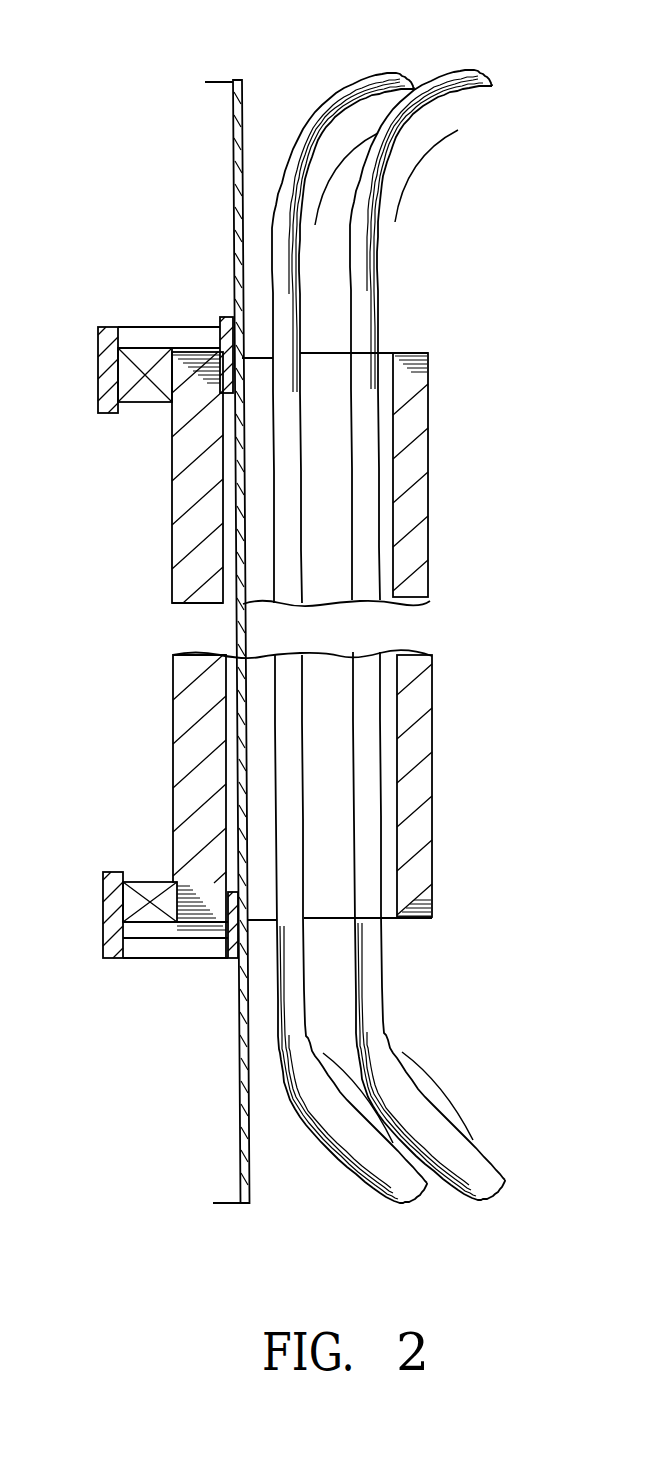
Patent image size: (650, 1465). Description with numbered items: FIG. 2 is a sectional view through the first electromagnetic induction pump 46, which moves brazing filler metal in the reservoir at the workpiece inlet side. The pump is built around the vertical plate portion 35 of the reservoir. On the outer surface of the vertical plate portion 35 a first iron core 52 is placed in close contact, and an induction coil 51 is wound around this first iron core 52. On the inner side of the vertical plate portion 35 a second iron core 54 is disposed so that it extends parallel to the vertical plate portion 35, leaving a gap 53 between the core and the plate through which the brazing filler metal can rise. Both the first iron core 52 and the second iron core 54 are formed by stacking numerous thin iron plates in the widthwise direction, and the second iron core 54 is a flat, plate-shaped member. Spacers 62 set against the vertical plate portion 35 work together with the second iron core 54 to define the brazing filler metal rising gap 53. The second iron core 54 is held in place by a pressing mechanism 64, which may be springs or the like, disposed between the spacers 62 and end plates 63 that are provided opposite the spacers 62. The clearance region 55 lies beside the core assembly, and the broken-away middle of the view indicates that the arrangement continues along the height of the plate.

The vertical plate portion 35 is at (242, 96).
The first electromagnetic induction pump 46 is at (412, 267).
The induction coil 51 is at (420, 95).
The first iron core 52 is at (413, 420).
The gap 53 is at (225, 522).
The second iron core 54 is at (190, 573).
The clearance gap 55 is at (388, 503).
The spacers 62 is at (220, 332).
The end plates 63 is at (98, 365).
The pressing mechanism 64 is at (142, 393).